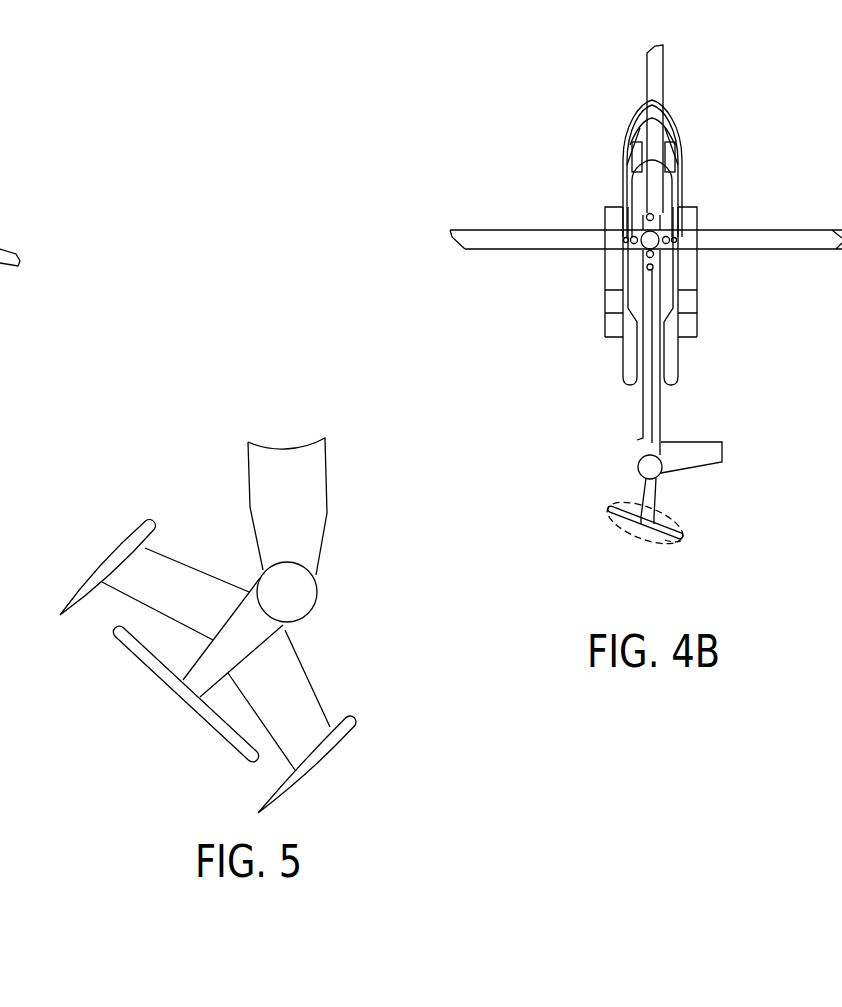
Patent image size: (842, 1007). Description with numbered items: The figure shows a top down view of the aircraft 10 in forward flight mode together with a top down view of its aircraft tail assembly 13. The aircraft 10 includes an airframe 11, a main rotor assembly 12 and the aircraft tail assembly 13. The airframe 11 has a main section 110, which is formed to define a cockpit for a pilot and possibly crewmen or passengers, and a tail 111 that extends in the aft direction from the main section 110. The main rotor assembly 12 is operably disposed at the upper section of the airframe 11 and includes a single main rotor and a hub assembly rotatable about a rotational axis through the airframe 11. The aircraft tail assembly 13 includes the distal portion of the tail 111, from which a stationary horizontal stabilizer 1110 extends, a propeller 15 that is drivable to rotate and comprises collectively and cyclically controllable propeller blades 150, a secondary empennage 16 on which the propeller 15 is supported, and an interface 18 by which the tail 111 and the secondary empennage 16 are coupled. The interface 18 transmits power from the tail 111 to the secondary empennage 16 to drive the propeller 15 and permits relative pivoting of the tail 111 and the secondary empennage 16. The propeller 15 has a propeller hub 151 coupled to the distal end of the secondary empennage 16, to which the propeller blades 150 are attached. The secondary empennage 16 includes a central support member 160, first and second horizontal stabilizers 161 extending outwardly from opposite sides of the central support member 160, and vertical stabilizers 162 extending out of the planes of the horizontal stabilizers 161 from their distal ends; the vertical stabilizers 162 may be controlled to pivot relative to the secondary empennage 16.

In FIG. 4B, the aircraft 10 is at (614, 97).
In FIG. 4B, the airframe 11 is at (675, 168).
In FIG. 4B, the main rotor assembly 12 is at (628, 233).
In FIG. 4B, the main section 110 is at (612, 270).
In FIG. 4B, the tail 111 is at (665, 417).
In FIG. 5, the tail 111 is at (318, 467).
In FIG. 4B, the stationary horizontal stabilizer 1110 is at (722, 450).
In FIG. 4B, the interface 18 is at (653, 470).
In FIG. 5, the interface 18 is at (303, 605).
In FIG. 4B, the secondary empennage 16 is at (650, 488).
In FIG. 5, the secondary empennage 16 is at (278, 630).
In FIG. 4B, the propeller 15 is at (623, 527).
In FIG. 5, the propeller 15 is at (182, 692).
In FIG. 4B, the aircraft tail assembly 13 is at (606, 548).
In FIG. 4B, the propeller hub 151 is at (647, 533).
In FIG. 4B, the propeller blades 150 is at (672, 543).
In FIG. 5, the vertical stabilizers 162 is at (117, 552).
In FIG. 5, the horizontal stabilizers 161 is at (145, 598).
In FIG. 5, the central support member 160 is at (233, 673).